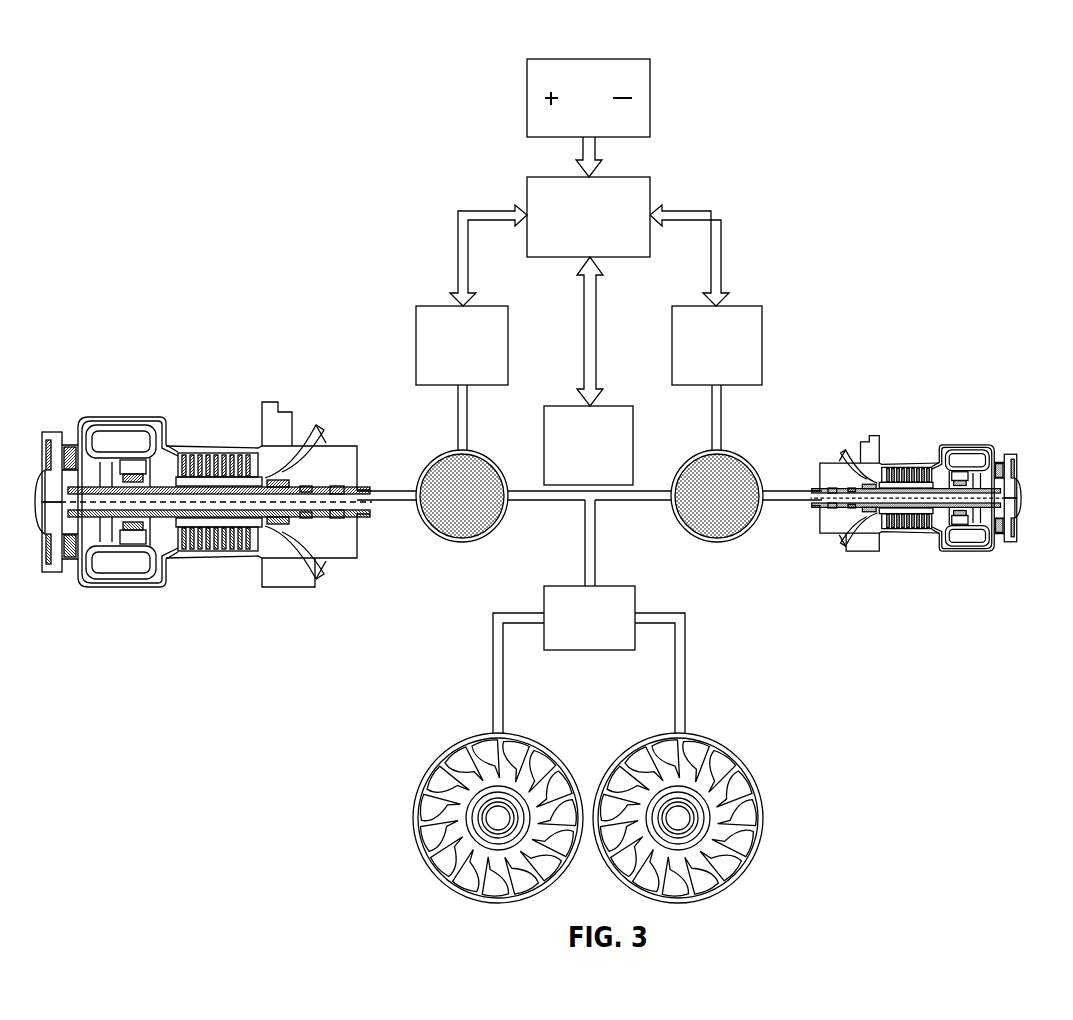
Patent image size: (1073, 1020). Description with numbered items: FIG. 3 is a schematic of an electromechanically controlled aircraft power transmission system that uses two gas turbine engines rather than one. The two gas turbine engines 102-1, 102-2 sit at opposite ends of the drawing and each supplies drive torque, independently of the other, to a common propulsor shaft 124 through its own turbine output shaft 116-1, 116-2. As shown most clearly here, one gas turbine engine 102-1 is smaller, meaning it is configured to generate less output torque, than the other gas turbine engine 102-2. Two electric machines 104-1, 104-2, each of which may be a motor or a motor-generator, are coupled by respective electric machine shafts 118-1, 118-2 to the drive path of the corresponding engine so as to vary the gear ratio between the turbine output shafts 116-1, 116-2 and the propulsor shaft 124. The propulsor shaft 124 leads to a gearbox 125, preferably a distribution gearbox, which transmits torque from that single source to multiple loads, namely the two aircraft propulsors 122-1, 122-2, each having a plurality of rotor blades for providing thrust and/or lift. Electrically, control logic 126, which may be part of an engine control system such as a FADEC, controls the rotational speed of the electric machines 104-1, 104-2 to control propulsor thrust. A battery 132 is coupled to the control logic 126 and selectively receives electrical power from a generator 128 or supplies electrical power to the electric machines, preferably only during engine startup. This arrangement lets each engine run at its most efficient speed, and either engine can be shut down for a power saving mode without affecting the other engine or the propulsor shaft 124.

The battery 132 is at (580, 58).
The control logic 126 is at (613, 177).
The electric machine 104-2 is at (488, 304).
The electric machine 104-1 is at (742, 305).
The electric machine shaft 118-2 is at (457, 420).
The electric machine shaft 118-1 is at (720, 417).
The generator 128 is at (562, 406).
The turbine output shaft 116-2 is at (388, 490).
The turbine output shaft 116-1 is at (781, 490).
The propulsor shaft 124 is at (597, 540).
The gearbox 125 is at (613, 586).
The aircraft propulsor 122-2 is at (481, 733).
The aircraft propulsor 122-1 is at (661, 733).
The gas turbine engine 102-2 is at (208, 401).
The gas turbine engine 102-1 is at (910, 425).